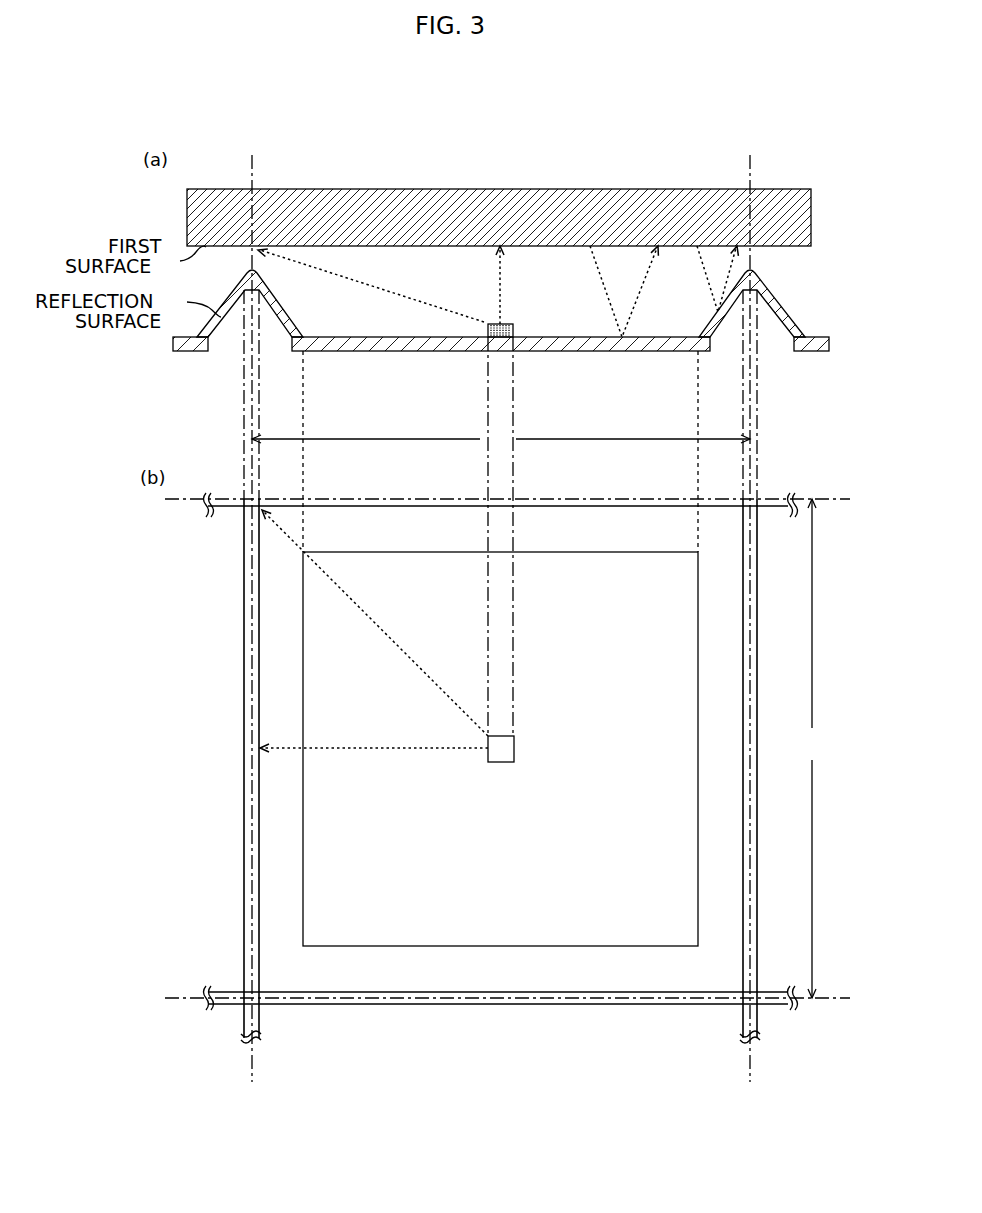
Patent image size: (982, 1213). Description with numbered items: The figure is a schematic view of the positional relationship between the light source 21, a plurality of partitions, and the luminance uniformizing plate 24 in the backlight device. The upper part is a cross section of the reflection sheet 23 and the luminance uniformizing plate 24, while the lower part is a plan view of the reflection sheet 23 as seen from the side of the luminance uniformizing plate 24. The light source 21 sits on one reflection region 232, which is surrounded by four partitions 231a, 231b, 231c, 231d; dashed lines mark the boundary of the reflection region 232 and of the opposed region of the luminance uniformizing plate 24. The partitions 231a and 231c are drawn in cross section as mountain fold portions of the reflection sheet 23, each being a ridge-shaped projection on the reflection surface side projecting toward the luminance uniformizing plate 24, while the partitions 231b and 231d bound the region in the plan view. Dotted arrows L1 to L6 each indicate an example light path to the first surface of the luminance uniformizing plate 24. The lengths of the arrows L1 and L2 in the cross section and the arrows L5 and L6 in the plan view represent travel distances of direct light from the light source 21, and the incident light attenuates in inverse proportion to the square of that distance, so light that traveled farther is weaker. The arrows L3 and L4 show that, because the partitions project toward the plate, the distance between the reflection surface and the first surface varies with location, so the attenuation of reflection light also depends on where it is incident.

The luminance uniformizing plate 24 is at (215, 205).
The light source 21 is at (514, 331).
The reflection sheet 23 is at (488, 672).
The partition 231a is at (227, 322).
The partition 231b is at (240, 507).
The partition 231c is at (773, 309).
The partition 231d is at (633, 1004).
The reflection region 232 is at (541, 713).
The arrow L1 is at (499, 277).
The arrow L2 is at (352, 285).
The arrow L3 is at (733, 275).
The arrow L4 is at (637, 301).
The arrow L5 is at (396, 752).
The arrow L6 is at (378, 636).